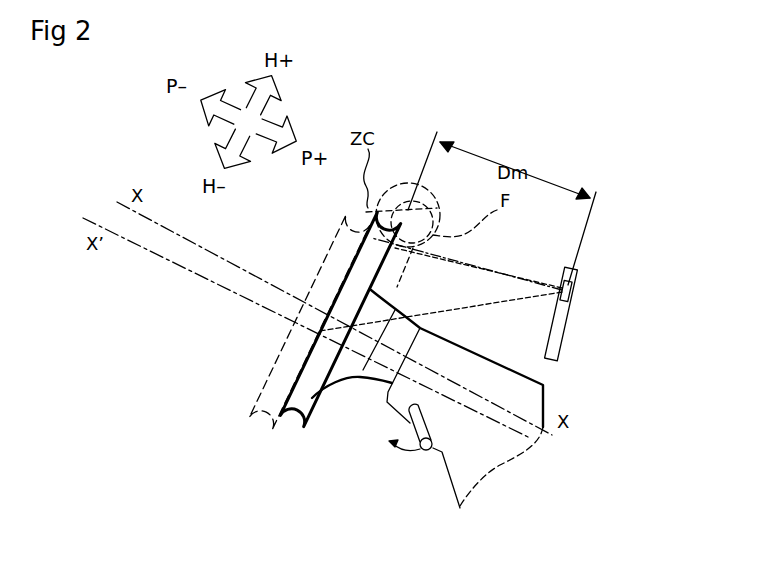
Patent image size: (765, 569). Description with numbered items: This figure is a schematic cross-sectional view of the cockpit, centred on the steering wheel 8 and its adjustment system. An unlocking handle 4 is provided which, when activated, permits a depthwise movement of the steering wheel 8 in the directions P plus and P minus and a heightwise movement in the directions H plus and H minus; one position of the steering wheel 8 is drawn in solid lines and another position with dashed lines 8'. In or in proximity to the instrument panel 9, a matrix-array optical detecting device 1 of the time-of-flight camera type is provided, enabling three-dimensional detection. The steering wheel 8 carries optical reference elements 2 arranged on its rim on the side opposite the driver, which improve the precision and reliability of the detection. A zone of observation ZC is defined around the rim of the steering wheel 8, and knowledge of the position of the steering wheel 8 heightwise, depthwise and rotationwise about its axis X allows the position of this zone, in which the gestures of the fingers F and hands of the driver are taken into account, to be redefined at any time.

The matrix-array optical detecting device 1 is at (578, 289).
The optical reference elements 2 is at (437, 233).
The unlocking handle 4 is at (410, 414).
The steering wheel 8 is at (283, 319).
The steering wheel in another position 8' is at (279, 321).
The instrument panel 9 is at (575, 334).